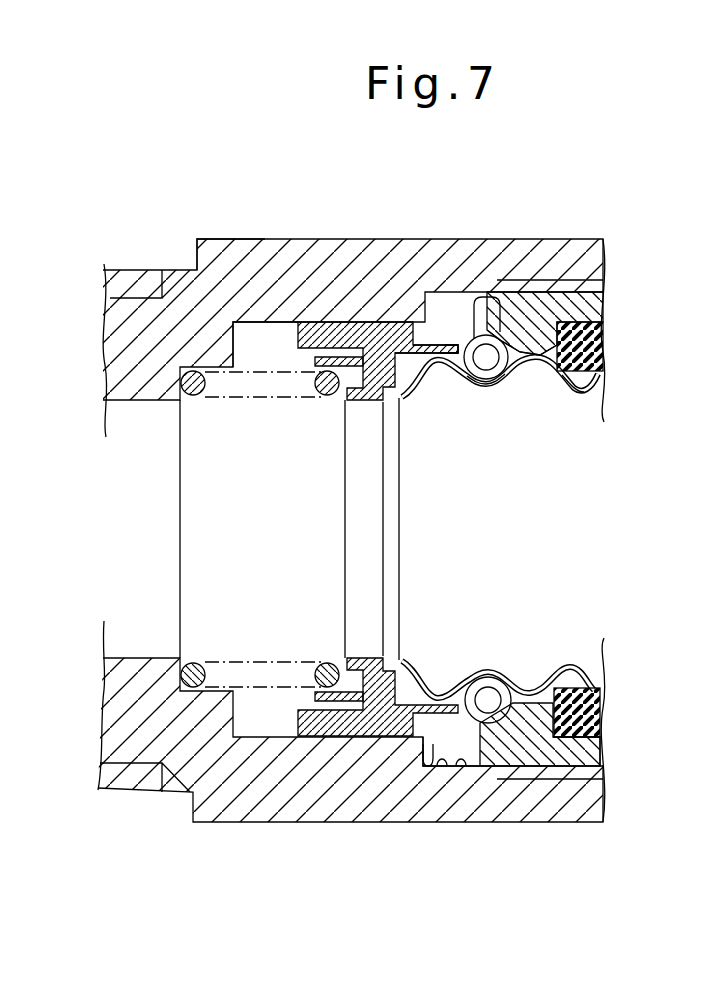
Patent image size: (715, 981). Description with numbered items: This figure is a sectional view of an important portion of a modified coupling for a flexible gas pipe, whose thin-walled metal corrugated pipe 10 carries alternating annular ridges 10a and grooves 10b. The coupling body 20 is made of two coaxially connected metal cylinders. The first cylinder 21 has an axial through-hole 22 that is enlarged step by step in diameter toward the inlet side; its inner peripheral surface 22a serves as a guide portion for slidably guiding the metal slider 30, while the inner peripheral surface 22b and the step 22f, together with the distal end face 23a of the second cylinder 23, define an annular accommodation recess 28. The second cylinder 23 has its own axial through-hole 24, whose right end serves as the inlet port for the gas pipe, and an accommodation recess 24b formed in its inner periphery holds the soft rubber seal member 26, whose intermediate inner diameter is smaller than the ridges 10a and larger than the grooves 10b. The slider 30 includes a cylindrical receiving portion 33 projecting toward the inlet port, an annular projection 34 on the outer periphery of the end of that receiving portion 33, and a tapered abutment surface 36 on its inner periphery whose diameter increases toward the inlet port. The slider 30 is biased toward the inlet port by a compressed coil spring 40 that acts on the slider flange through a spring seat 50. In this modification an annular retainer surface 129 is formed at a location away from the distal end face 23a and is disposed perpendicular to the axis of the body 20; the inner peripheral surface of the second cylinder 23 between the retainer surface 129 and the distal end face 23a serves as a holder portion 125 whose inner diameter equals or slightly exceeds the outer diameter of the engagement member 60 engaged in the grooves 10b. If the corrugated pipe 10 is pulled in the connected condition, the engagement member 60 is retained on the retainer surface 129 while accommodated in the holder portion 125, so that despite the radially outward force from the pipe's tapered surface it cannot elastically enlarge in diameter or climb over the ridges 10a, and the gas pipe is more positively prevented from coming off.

The corrugated pipe 10 is at (601, 400).
The ridge 10a is at (604, 345).
The groove 10b is at (578, 395).
The body 20 is at (307, 235).
The first cylinder 21 is at (238, 236).
The through-hole 22 is at (139, 406).
The inner peripheral surface 22a is at (270, 328).
The inner peripheral surface 22b is at (432, 768).
The step 22f is at (425, 750).
The second cylinder 23 is at (608, 302).
The distal end face 23a is at (484, 335).
The through-hole 24 is at (563, 747).
The accommodation recess 24b is at (583, 767).
The seal member 26 is at (601, 704).
The accommodation recess 28 is at (462, 767).
The slider 30 is at (397, 319).
The receiving portion 33 is at (440, 343).
The annular projection 34 is at (456, 345).
The abutment surface 36 is at (454, 350).
The coil spring 40 is at (187, 368).
The spring seat 50 is at (378, 402).
The engagement member 60 is at (515, 352).
The holder portion 125 is at (489, 336).
The retainer surface 129 is at (491, 381).